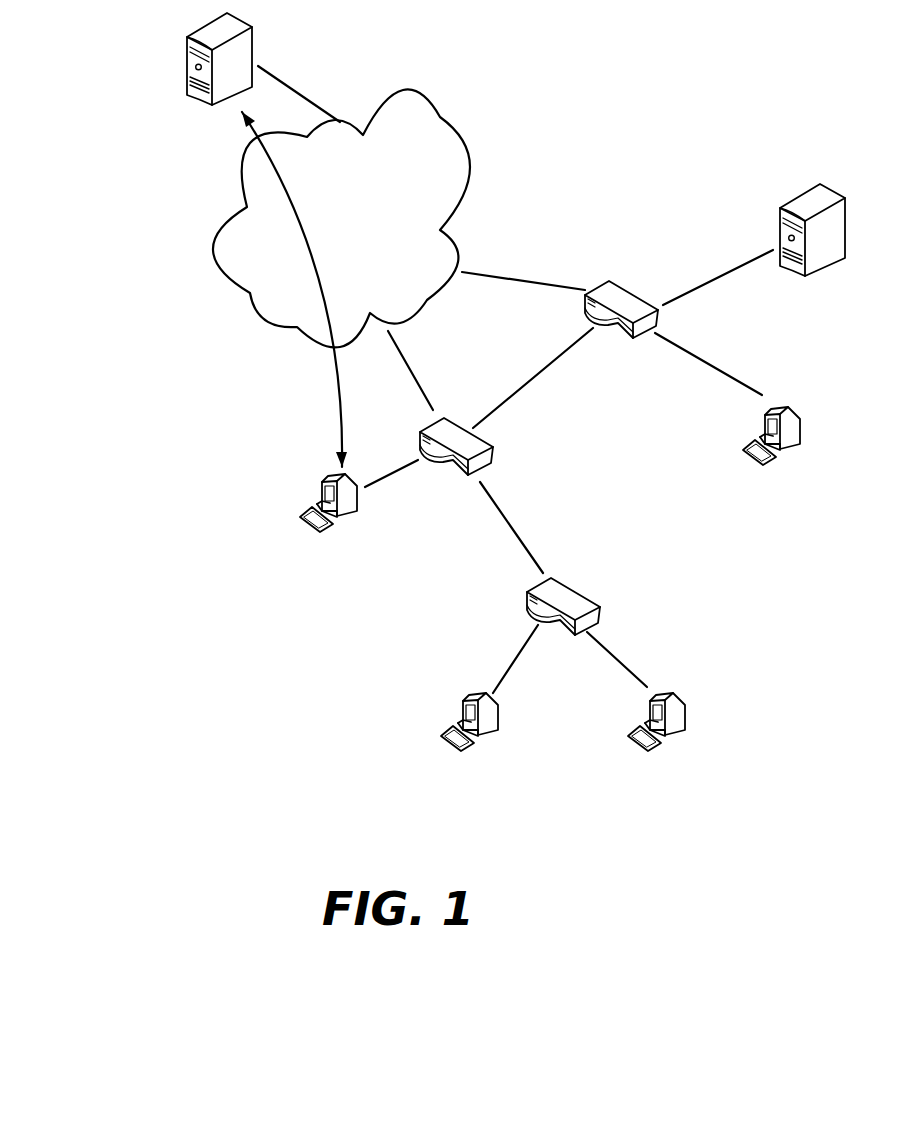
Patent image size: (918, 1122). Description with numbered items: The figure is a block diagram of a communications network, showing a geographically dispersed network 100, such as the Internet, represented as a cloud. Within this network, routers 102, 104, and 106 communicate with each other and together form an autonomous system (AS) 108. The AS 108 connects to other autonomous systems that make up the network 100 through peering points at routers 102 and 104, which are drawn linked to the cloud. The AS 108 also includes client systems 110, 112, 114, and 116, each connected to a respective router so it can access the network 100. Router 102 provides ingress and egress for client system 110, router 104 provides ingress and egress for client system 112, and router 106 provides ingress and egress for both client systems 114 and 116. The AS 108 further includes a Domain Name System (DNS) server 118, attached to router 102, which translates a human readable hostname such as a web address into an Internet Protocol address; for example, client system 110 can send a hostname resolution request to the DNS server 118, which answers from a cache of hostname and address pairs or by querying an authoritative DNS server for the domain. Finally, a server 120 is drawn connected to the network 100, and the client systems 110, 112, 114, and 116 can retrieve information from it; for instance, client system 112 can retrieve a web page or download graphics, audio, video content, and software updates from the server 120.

The network 100 is at (195, 265).
The router 102 is at (628, 297).
The router 104 is at (470, 477).
The router 106 is at (527, 598).
The autonomous system 108 is at (585, 166).
The client system 110 is at (762, 408).
The client system 112 is at (323, 478).
The client system 114 is at (467, 697).
The client system 116 is at (650, 697).
The Domain Name System (DNS) server 118 is at (793, 210).
The server 120 is at (203, 40).